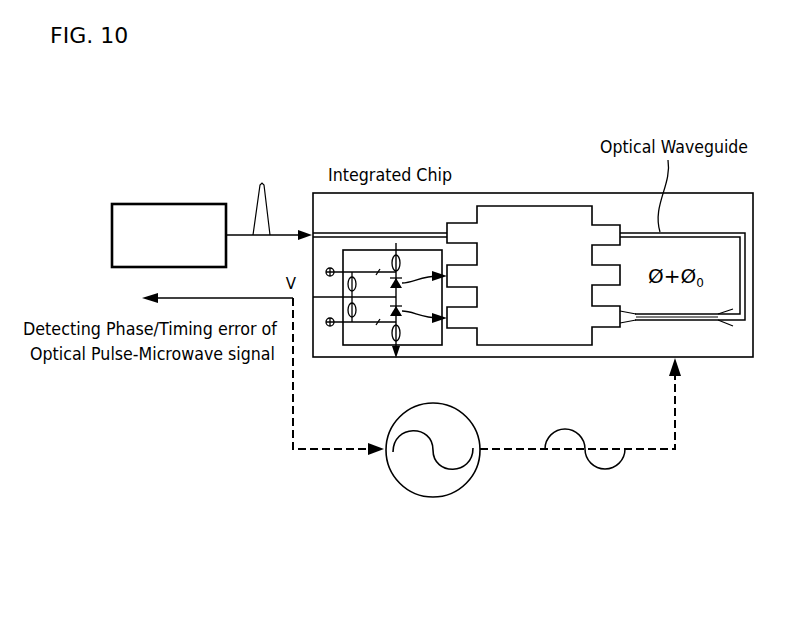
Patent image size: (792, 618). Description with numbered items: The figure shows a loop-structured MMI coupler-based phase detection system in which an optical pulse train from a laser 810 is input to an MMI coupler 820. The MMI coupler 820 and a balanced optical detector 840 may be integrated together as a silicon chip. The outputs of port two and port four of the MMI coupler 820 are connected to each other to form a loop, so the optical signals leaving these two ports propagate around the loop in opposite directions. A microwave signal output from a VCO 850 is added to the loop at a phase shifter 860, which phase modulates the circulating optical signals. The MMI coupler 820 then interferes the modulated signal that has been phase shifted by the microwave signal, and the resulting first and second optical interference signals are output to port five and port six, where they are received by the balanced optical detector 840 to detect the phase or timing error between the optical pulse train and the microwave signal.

The laser 810 is at (167, 204).
The MMI coupler 820 is at (556, 193).
The balanced optical detector 840 is at (361, 358).
The VCO 850 is at (434, 497).
The phase shifter 860 is at (713, 332).